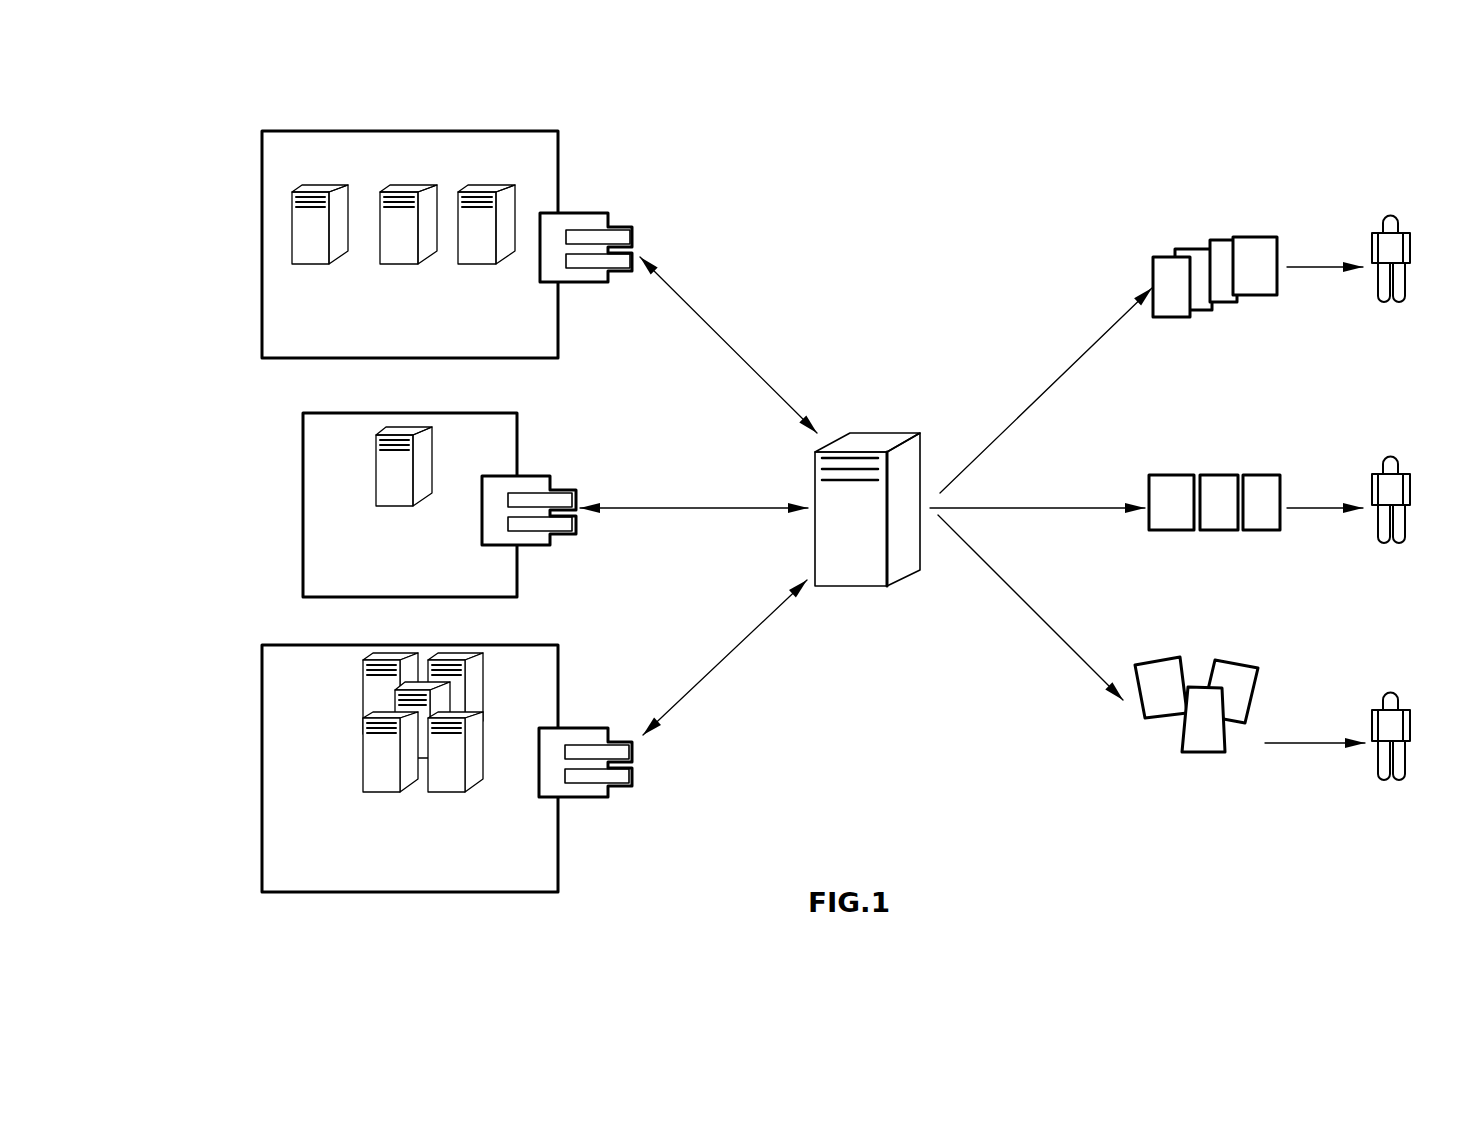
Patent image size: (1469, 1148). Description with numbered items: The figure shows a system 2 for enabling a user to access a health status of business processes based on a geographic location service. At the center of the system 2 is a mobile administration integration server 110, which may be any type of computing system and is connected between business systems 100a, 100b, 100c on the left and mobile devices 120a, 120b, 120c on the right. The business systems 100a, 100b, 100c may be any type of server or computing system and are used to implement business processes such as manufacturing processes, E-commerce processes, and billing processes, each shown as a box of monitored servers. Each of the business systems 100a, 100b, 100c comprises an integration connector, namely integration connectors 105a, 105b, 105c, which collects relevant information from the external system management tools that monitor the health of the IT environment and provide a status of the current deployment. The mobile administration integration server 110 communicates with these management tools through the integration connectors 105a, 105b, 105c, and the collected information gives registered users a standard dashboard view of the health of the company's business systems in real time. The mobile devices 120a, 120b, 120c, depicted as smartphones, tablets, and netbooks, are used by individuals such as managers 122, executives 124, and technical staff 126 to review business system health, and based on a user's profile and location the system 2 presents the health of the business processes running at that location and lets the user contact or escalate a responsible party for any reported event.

The system 2 is at (200, 142).
The business system 100a is at (262, 208).
The business system 100b is at (303, 490).
The business system 100c is at (262, 722).
The integration connector 105a is at (608, 213).
The integration connector 105b is at (550, 476).
The integration connector 105c is at (608, 728).
The mobile administration integration server 110 is at (855, 578).
The mobile device 120a is at (1217, 240).
The mobile device 120b is at (1215, 475).
The mobile device 120c is at (1158, 667).
The managers 122 is at (1390, 295).
The executives 124 is at (1392, 533).
The technical staff 126 is at (1387, 785).